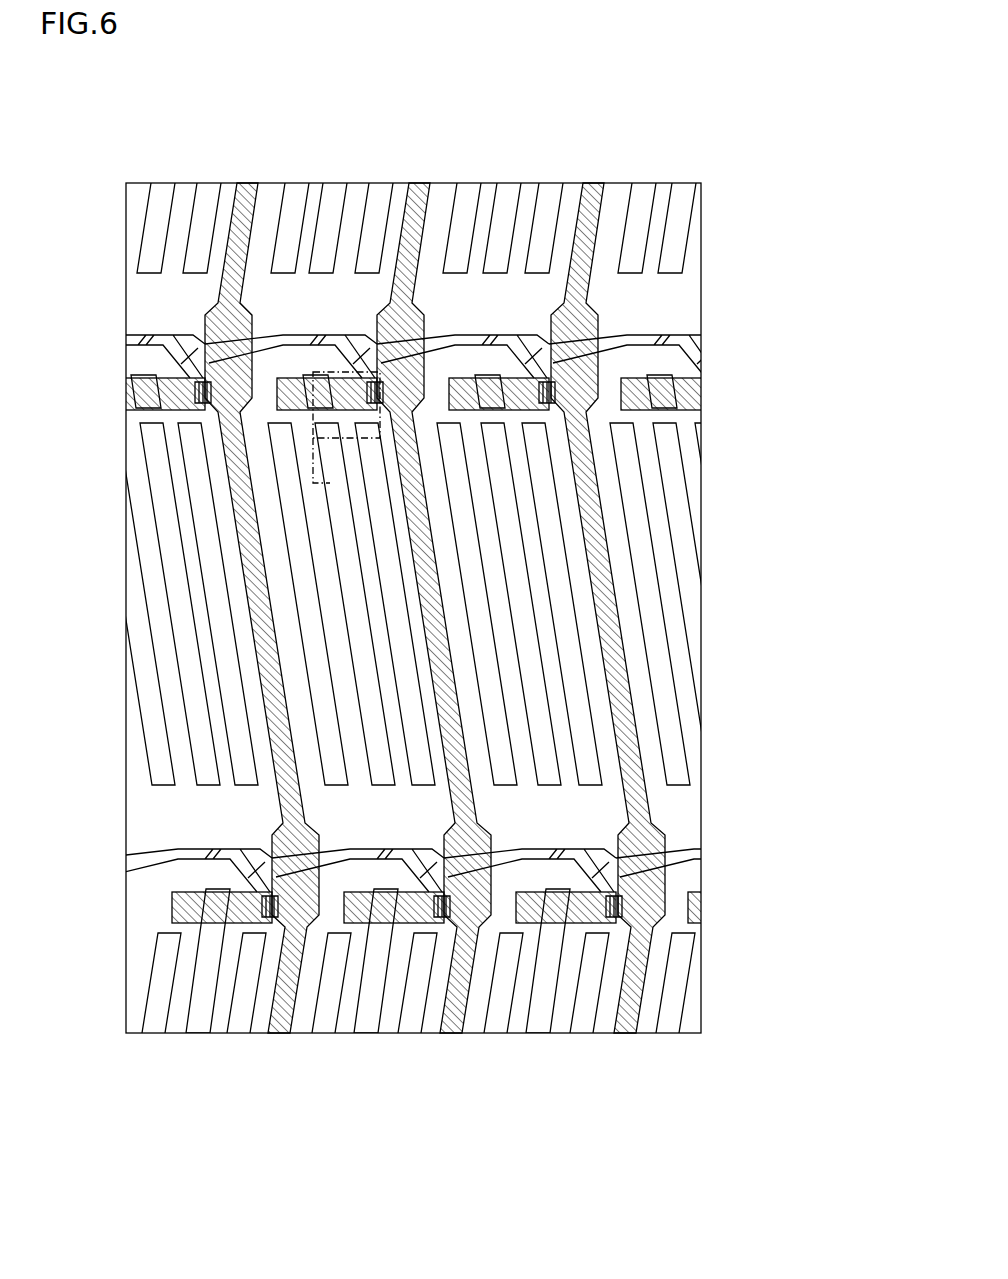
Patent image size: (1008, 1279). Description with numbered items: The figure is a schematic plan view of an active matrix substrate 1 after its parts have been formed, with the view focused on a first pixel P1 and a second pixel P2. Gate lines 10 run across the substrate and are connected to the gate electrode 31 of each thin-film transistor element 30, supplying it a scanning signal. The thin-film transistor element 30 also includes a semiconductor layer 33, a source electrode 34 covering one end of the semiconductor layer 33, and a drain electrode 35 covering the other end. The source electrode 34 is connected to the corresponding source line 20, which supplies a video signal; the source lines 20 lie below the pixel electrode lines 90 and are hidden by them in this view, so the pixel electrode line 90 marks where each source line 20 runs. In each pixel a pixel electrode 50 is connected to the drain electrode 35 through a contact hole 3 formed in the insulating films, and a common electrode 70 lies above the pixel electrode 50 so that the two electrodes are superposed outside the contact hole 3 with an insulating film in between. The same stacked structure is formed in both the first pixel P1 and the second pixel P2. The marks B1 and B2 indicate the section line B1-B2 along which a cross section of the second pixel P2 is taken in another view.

The active matrix substrate 1 is at (724, 154).
The contact hole 3 is at (316, 382).
The gate line 10 is at (493, 332).
The thin-film transistor element 30 is at (360, 233).
The gate electrode 31 is at (365, 378).
The semiconductor layer 33 is at (378, 383).
The source electrode 34 is at (385, 380).
The drain electrode 35 is at (337, 385).
The pixel electrode 50 is at (291, 530).
The common electrode 70 is at (285, 636).
The pixel electrode line 90 is at (445, 649).
The source line 20 is at (449, 1035).
The first pixel P1 is at (594, 555).
The second pixel P2 is at (299, 752).
The line B1-B2 end point B1 is at (330, 418).
The line B1-B2 end point B2 is at (333, 483).